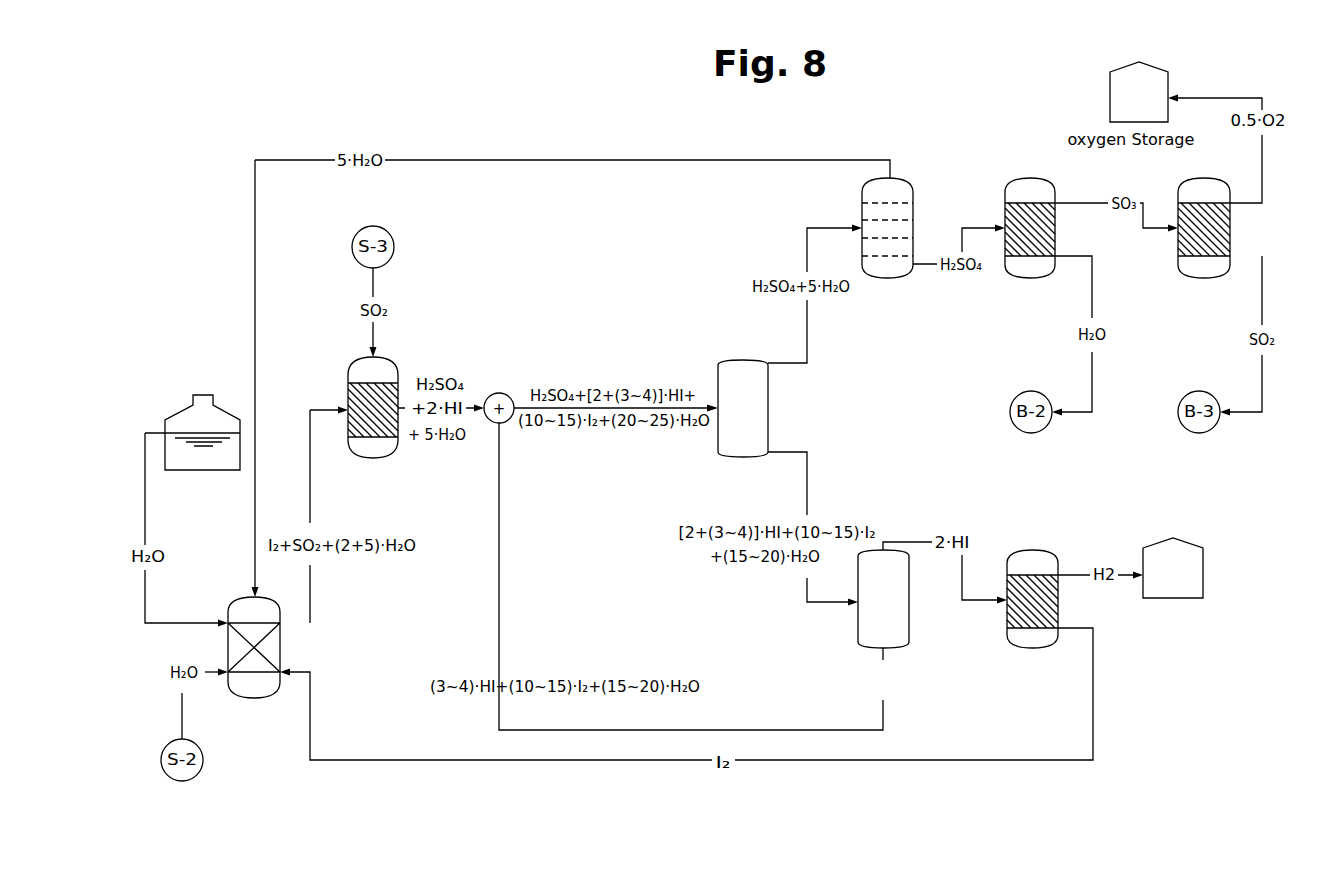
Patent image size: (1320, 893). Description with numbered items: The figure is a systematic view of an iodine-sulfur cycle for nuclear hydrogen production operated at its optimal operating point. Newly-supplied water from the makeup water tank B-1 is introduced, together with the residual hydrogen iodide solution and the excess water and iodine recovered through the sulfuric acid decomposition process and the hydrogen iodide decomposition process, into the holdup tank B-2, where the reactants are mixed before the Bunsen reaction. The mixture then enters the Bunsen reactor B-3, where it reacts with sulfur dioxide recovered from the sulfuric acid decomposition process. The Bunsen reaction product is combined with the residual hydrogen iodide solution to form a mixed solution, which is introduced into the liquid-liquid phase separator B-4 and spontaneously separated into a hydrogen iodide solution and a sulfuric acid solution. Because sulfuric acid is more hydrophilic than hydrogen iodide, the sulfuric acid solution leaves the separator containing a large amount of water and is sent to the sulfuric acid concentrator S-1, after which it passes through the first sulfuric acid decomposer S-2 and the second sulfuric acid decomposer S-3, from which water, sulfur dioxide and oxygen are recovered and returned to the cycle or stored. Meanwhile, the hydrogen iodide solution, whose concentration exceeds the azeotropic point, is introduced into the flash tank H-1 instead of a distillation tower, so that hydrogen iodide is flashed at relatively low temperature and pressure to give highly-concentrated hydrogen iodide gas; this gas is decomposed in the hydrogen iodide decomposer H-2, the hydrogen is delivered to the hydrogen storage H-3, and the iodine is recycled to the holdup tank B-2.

The makeup water tank B-1 is at (203, 458).
The holdup tank B-2 is at (255, 669).
The Bunsen reactor B-3 is at (378, 429).
The liquid-liquid phase separator B-4 is at (744, 430).
The sulfuric acid concentrator S-1 is at (889, 250).
The first sulfuric acid decomposer S-2 is at (1030, 250).
The second sulfuric acid decomposer S-3 is at (1205, 250).
The flash tank H-1 is at (879, 624).
The hydrogen iodide decomposer H-2 is at (1030, 623).
The hydrogen storage H-3 is at (1170, 592).